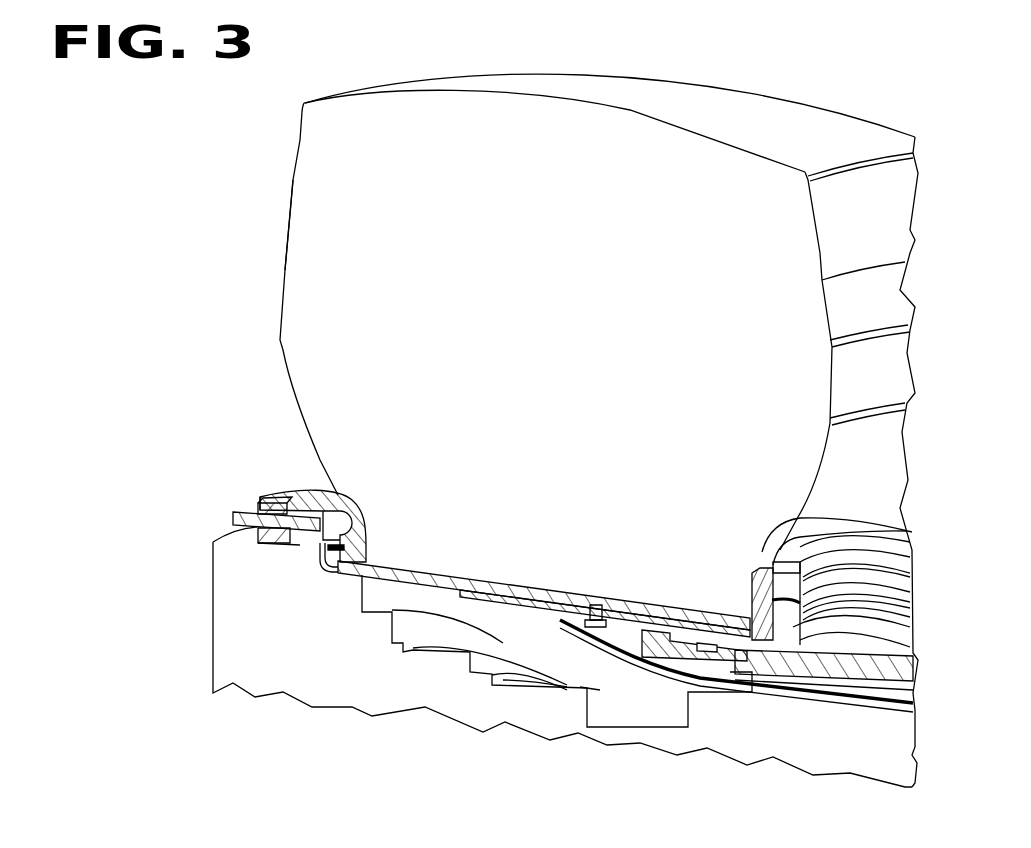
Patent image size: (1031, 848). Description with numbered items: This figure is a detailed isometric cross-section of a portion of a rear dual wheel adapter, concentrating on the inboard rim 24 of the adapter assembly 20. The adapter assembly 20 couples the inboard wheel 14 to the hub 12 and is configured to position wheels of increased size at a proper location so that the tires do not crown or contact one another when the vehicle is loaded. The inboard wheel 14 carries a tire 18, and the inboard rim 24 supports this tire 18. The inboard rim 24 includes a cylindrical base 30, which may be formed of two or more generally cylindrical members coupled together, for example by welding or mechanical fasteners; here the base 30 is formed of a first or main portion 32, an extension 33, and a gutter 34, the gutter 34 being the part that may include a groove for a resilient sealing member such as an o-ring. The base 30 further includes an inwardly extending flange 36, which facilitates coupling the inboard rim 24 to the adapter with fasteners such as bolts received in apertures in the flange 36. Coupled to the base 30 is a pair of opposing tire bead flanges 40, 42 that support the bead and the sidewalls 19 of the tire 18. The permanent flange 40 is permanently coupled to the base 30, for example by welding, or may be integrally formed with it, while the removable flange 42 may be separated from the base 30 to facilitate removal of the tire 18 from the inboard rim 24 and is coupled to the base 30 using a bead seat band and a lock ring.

The hub 12 is at (220, 590).
The inboard wheel 14 is at (368, 78).
The tire 18 is at (840, 118).
The sidewalls 19 is at (291, 183).
The adapter assembly 20 is at (233, 478).
The inboard rim 24 is at (323, 572).
The cylindrical base 30 is at (510, 603).
The main portion 32 is at (562, 612).
The extension 33 is at (395, 585).
The gutter 34 is at (785, 695).
The inwardly extending flange 36 is at (655, 660).
The permanent flange 40 is at (360, 515).
The removable flange 42 is at (870, 521).